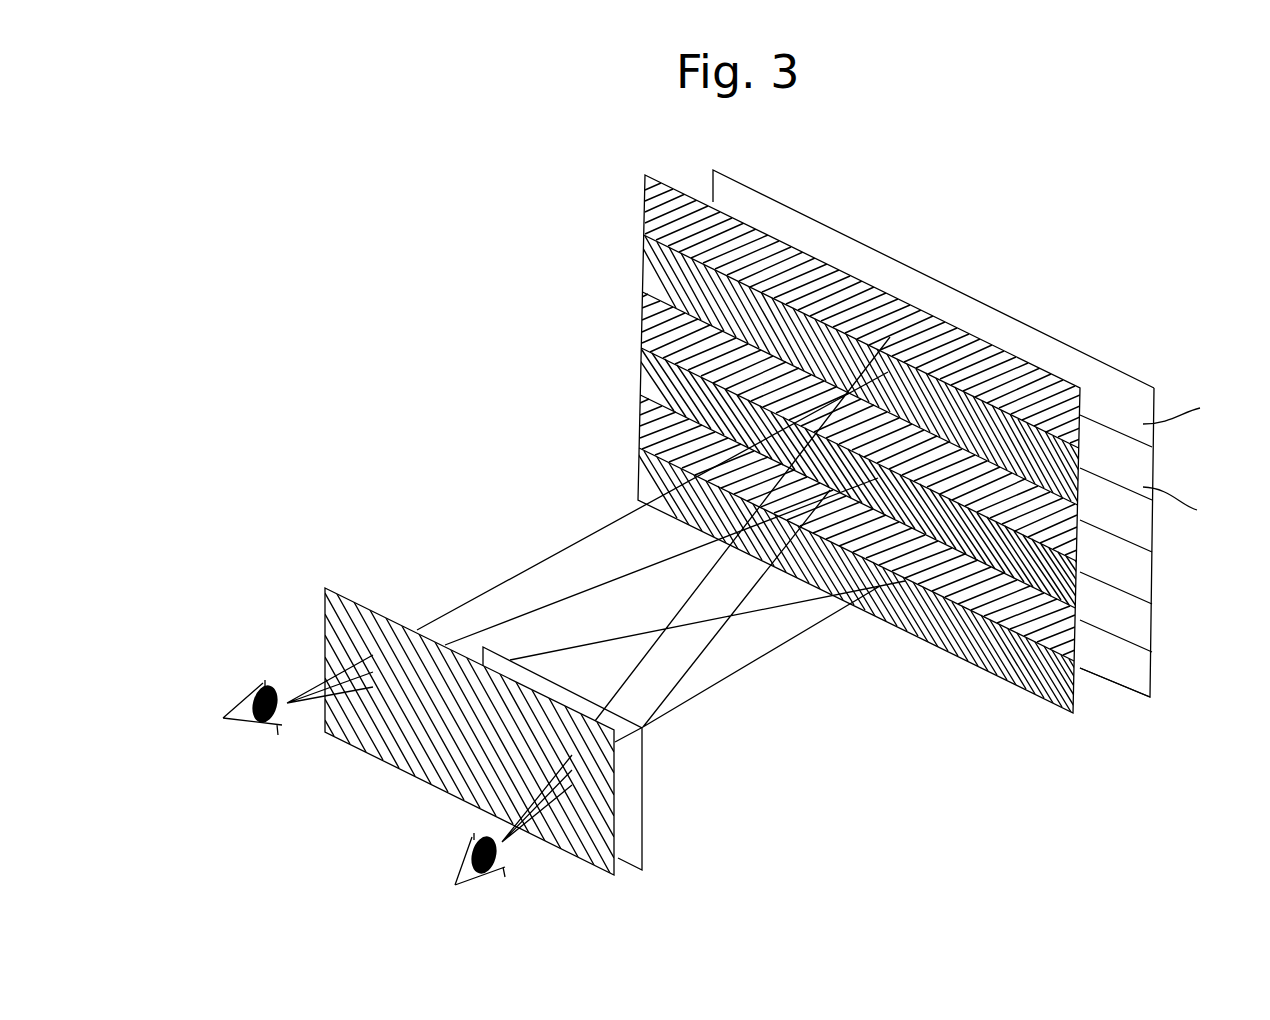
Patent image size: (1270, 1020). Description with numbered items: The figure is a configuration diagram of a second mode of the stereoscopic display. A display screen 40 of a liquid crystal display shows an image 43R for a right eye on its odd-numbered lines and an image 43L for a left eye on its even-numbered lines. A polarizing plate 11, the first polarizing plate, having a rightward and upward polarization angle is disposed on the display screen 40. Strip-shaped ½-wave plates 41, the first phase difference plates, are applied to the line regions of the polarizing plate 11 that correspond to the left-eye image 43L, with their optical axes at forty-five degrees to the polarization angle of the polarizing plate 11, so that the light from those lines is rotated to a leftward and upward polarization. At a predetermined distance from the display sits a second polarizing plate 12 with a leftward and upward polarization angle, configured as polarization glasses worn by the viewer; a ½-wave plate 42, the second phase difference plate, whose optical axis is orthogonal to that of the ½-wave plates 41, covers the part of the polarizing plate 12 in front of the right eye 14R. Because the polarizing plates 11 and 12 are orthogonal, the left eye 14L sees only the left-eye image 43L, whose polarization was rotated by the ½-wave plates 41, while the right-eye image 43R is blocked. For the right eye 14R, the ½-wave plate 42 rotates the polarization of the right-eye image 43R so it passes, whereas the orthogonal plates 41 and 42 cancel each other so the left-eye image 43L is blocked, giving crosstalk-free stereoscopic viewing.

The polarizing plate 11 is at (638, 204).
The polarizing plate 12 is at (345, 635).
The left eye 14L is at (263, 695).
The right eye 14R is at (478, 830).
The display screen 40 is at (904, 248).
The ½-wave plates 41 is at (638, 472).
The ½-wave plate 42 is at (633, 802).
The image for a right eye 43R is at (1154, 541).
The image for a left eye 43L is at (1153, 569).